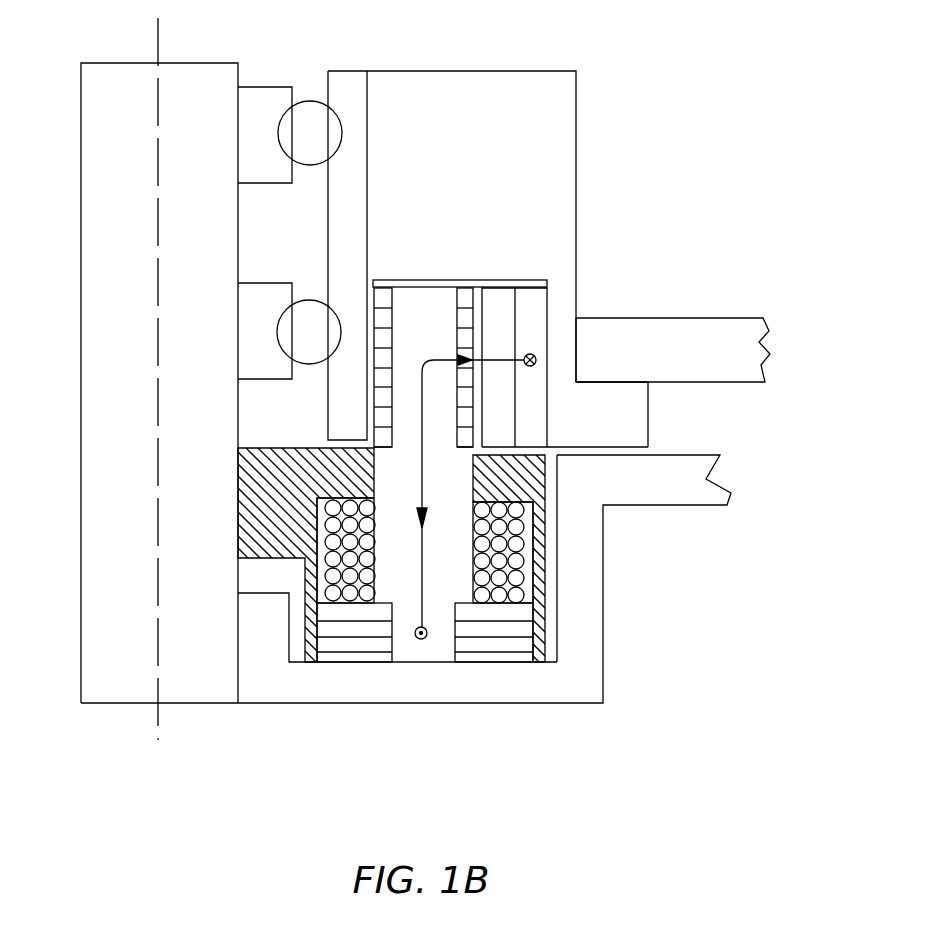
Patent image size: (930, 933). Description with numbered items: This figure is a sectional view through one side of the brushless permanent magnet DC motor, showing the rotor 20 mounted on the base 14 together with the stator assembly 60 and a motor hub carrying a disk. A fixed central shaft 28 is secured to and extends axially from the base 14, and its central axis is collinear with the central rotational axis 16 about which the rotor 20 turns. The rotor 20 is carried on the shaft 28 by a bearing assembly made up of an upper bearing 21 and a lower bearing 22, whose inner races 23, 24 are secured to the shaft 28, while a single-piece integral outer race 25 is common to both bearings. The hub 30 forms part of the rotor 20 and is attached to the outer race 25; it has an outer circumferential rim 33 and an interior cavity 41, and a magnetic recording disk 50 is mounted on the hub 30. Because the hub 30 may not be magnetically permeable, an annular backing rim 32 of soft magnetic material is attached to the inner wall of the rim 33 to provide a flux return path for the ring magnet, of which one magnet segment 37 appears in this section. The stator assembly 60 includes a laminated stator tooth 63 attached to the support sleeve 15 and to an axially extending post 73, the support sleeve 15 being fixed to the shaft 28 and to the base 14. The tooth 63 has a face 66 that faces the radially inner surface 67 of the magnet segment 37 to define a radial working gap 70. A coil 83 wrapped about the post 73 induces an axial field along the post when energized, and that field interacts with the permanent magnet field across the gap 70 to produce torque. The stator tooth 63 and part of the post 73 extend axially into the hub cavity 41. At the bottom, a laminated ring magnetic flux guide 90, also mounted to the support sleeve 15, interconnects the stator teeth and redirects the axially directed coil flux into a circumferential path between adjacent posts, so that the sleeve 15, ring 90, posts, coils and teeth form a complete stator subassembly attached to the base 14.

The base 14 is at (585, 675).
The support sleeve 15 is at (538, 480).
The central rotational axis 16 is at (158, 180).
The rotor 20 is at (688, 126).
The upper bearing 21 is at (312, 118).
The lower bearing 22 is at (290, 347).
The inner race 23 is at (268, 97).
The inner race 24 is at (243, 312).
The single-piece integral outer race 25 is at (348, 88).
The fixed central shaft 28 is at (203, 85).
The hub 30 is at (578, 87).
The annular backing rim 32 is at (537, 295).
The outer circumferential rim 33 is at (562, 313).
The magnet segment 37 is at (507, 418).
The interior cavity 41 is at (370, 278).
The magnetic recording disk 50 is at (723, 332).
The stator assembly 60 is at (556, 600).
The stator tooth 63 is at (388, 284).
The face 66 is at (459, 298).
The radially inner surface 67 is at (490, 305).
The radial working gap 70 is at (484, 305).
The post 73 is at (405, 637).
The coil 83 is at (515, 548).
The ring magnetic flux guide 90 is at (518, 628).